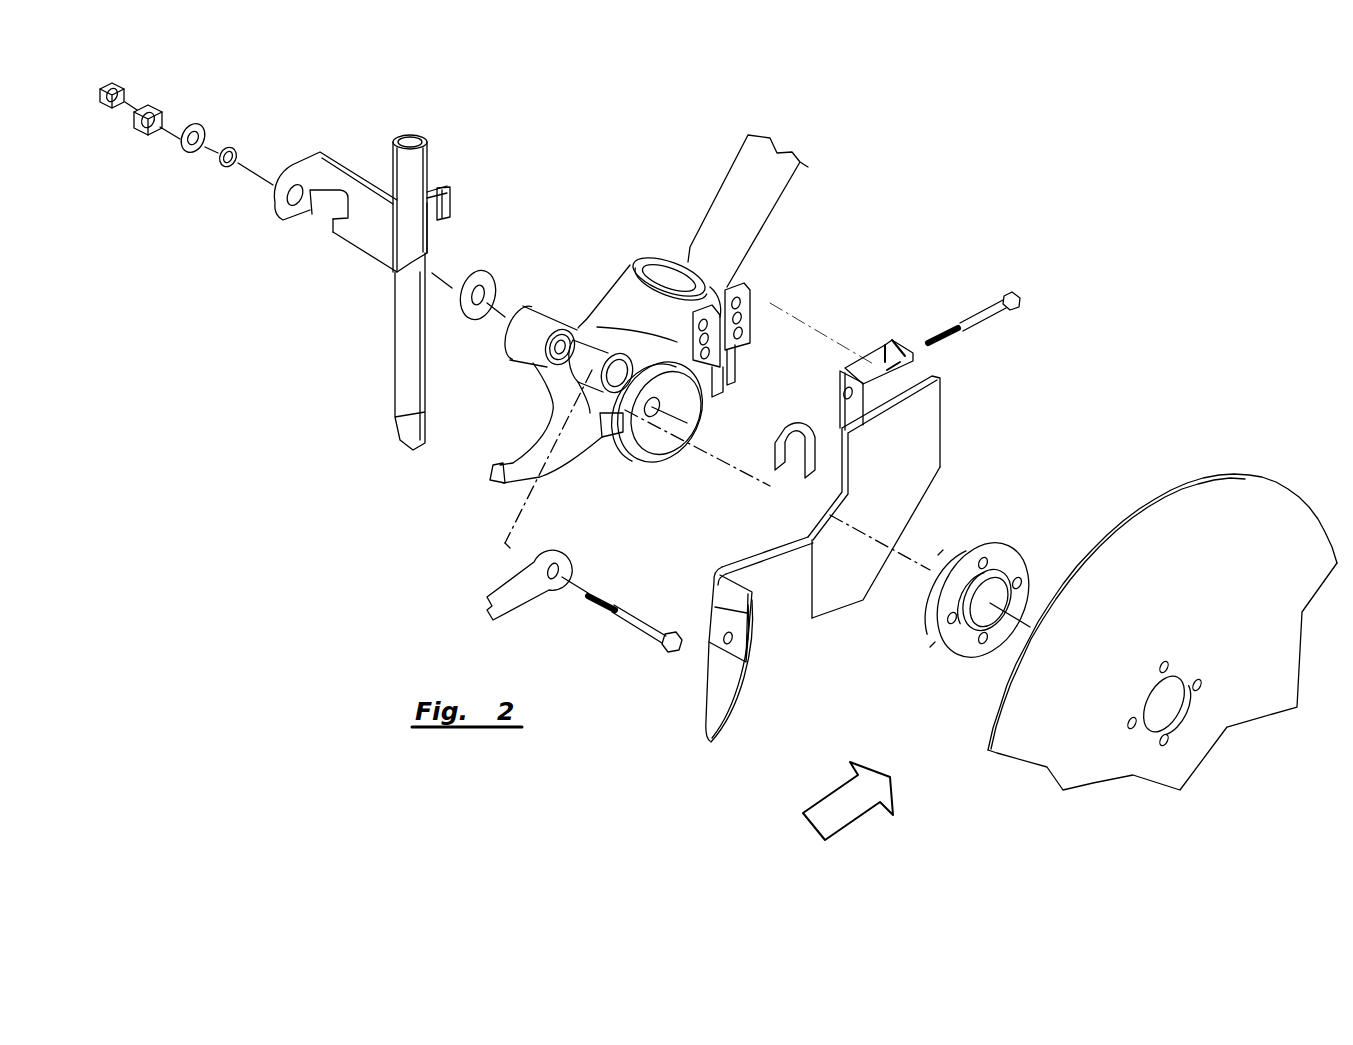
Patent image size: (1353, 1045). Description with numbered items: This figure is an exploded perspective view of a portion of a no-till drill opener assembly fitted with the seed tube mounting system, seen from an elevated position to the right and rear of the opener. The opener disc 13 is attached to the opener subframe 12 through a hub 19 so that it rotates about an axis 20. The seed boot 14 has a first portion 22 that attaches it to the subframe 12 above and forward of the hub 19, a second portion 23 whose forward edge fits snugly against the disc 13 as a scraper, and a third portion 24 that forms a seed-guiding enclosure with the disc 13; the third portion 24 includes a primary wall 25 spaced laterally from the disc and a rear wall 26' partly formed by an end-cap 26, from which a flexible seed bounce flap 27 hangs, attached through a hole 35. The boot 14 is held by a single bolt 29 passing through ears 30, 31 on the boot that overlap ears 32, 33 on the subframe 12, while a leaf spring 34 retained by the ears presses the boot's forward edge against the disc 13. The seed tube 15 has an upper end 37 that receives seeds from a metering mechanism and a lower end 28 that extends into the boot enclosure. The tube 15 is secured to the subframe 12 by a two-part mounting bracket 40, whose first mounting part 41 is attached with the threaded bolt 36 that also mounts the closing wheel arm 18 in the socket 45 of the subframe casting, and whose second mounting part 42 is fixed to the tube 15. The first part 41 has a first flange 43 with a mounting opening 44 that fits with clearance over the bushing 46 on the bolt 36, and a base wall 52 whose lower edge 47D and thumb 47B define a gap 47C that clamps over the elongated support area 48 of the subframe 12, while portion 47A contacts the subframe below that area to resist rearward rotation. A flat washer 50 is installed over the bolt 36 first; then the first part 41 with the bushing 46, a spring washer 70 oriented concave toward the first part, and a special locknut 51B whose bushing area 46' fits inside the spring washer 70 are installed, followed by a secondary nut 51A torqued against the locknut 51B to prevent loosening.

The opener subframe 12 is at (758, 205).
The opener disc 13 is at (1238, 496).
The seed boot 14 is at (955, 462).
The seed tube assembly 15 is at (410, 358).
The closing wheel arm 18 is at (532, 562).
The hub 19 is at (1001, 553).
The axis 20 is at (740, 460).
The first portion 22 is at (920, 433).
The second portion 23 is at (920, 510).
The third portion 24 is at (760, 570).
The primary wall 25 is at (772, 620).
The end-cap 26 is at (706, 614).
The rear wall 26' is at (775, 664).
The seed bounce flap 27 is at (716, 727).
The lower end 28 is at (400, 440).
The bolt 29 is at (978, 320).
The ear 30 is at (841, 378).
The ear 31 is at (888, 345).
The ear 32 is at (712, 290).
The ear 33 is at (742, 286).
The leaf spring 34 is at (780, 432).
The hole 35 is at (724, 643).
The threaded bolt 36 is at (646, 631).
The upper end 37 is at (416, 136).
The mounting bracket 40 is at (465, 174).
The first mounting part 41 is at (393, 227).
The second mounting part 42 is at (438, 190).
The first flange 43 is at (301, 170).
The mounting opening 44 is at (283, 222).
The socket 45 is at (560, 350).
The bushing 46 is at (253, 127).
The bushing area 46' is at (108, 164).
The portion 47A is at (348, 234).
The thumb 47B is at (336, 226).
The gap 47C is at (320, 212).
The lower edge 47D is at (350, 176).
The area 48 is at (587, 322).
The flat washer 50 is at (482, 272).
The secondary nut 51A is at (120, 84).
The special locknut 51B is at (152, 106).
The base wall 52 is at (367, 203).
The spring washer 70 is at (182, 148).